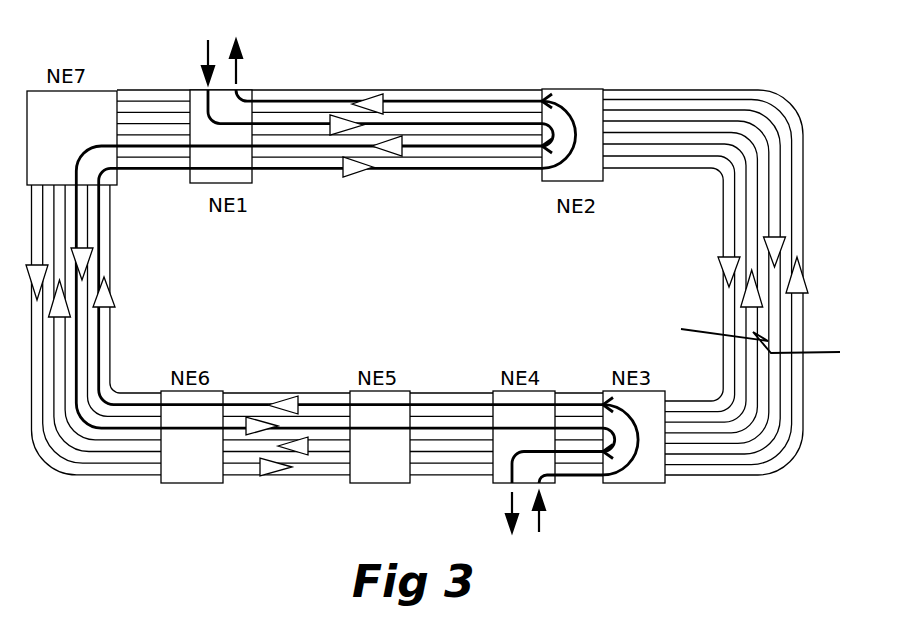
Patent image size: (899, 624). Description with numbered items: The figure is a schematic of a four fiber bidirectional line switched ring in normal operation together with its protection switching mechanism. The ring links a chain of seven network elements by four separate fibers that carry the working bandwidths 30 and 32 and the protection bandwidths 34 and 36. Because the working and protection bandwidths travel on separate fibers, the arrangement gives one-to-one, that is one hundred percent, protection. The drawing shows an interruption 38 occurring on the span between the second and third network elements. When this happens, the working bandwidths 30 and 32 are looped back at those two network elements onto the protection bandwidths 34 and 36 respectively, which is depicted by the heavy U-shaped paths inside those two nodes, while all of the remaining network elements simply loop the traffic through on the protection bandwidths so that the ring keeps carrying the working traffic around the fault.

The working bandwidth 30 is at (648, 122).
The working bandwidth 32 is at (682, 100).
The protection bandwidth 34 is at (637, 168).
The protection bandwidth 36 is at (658, 146).
The interruption 38 is at (718, 325).